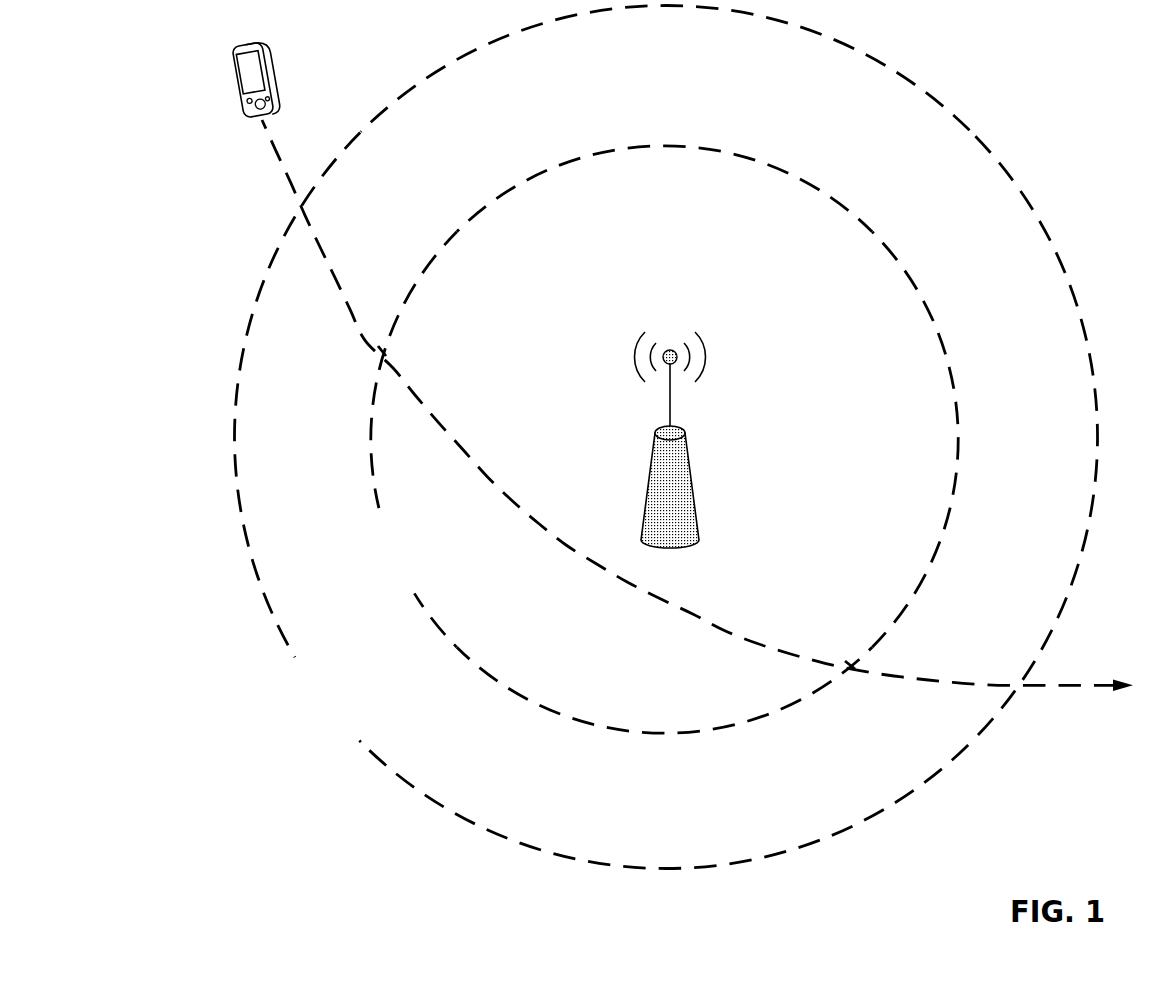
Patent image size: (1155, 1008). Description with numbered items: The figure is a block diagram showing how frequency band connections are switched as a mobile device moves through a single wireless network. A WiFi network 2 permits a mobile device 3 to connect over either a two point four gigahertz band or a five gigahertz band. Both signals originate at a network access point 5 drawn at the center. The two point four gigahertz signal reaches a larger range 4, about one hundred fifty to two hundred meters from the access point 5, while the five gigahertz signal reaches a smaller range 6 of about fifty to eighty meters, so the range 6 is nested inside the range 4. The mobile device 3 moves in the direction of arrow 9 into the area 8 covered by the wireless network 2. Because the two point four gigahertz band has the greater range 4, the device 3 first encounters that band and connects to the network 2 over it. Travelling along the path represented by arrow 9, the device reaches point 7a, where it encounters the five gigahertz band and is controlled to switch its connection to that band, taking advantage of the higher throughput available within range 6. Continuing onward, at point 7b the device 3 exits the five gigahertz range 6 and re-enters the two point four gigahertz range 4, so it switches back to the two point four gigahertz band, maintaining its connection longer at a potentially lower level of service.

The WiFi network 2 is at (735, 370).
The mobile device 3 is at (236, 68).
The range of 2.4 GHz band 4 is at (397, 98).
The network access point 5 is at (700, 492).
The range of 5 GHz band 6 is at (925, 303).
The point of encountering 5 GHz band 7a is at (383, 352).
The point of exiting 5 GHz range 7b is at (850, 665).
The area covered by wireless network 8 is at (634, 436).
The arrow 9 is at (317, 243).